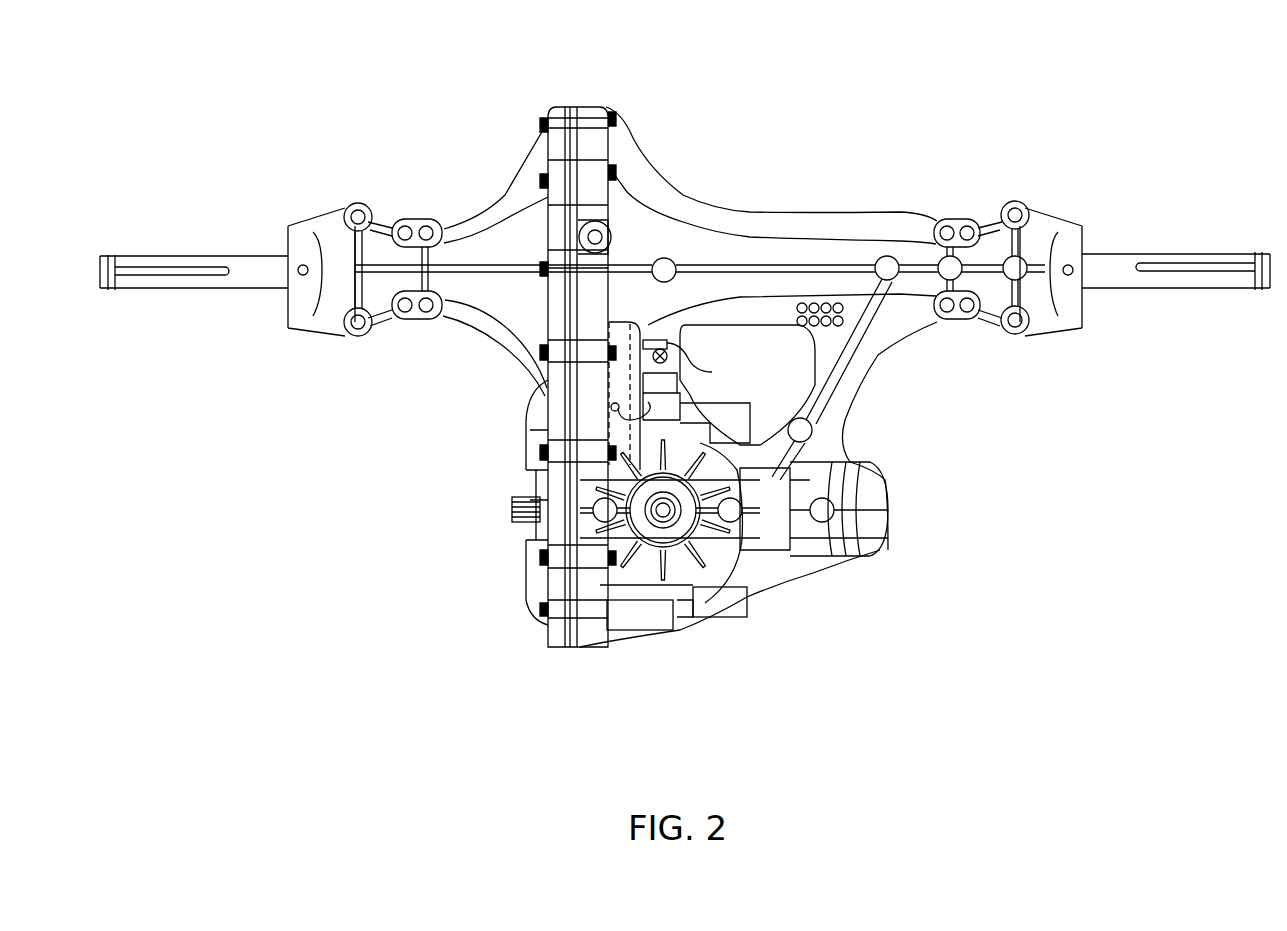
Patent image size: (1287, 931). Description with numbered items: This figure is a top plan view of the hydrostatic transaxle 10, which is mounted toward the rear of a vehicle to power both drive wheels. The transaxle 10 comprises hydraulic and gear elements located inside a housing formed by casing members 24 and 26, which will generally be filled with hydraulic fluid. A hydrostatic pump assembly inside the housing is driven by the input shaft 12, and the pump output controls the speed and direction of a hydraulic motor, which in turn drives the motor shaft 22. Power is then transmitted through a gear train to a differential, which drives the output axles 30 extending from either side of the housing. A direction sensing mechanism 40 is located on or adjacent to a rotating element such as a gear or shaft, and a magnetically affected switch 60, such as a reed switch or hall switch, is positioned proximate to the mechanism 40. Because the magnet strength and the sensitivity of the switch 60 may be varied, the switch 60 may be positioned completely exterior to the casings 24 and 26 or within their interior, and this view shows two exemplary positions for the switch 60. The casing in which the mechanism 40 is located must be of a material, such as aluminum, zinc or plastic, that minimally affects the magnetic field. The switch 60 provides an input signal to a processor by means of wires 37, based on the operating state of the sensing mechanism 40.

The hydrostatic transaxle 10 is at (978, 104).
The input shaft 12 is at (704, 515).
The motor shaft 22 is at (514, 508).
The casing member 24 is at (648, 166).
The casing member 26 is at (506, 194).
The output axles 30 is at (240, 258).
The wires 37 is at (704, 362).
The direction sensing mechanism 40 is at (630, 321).
The switch 60 is at (660, 340).